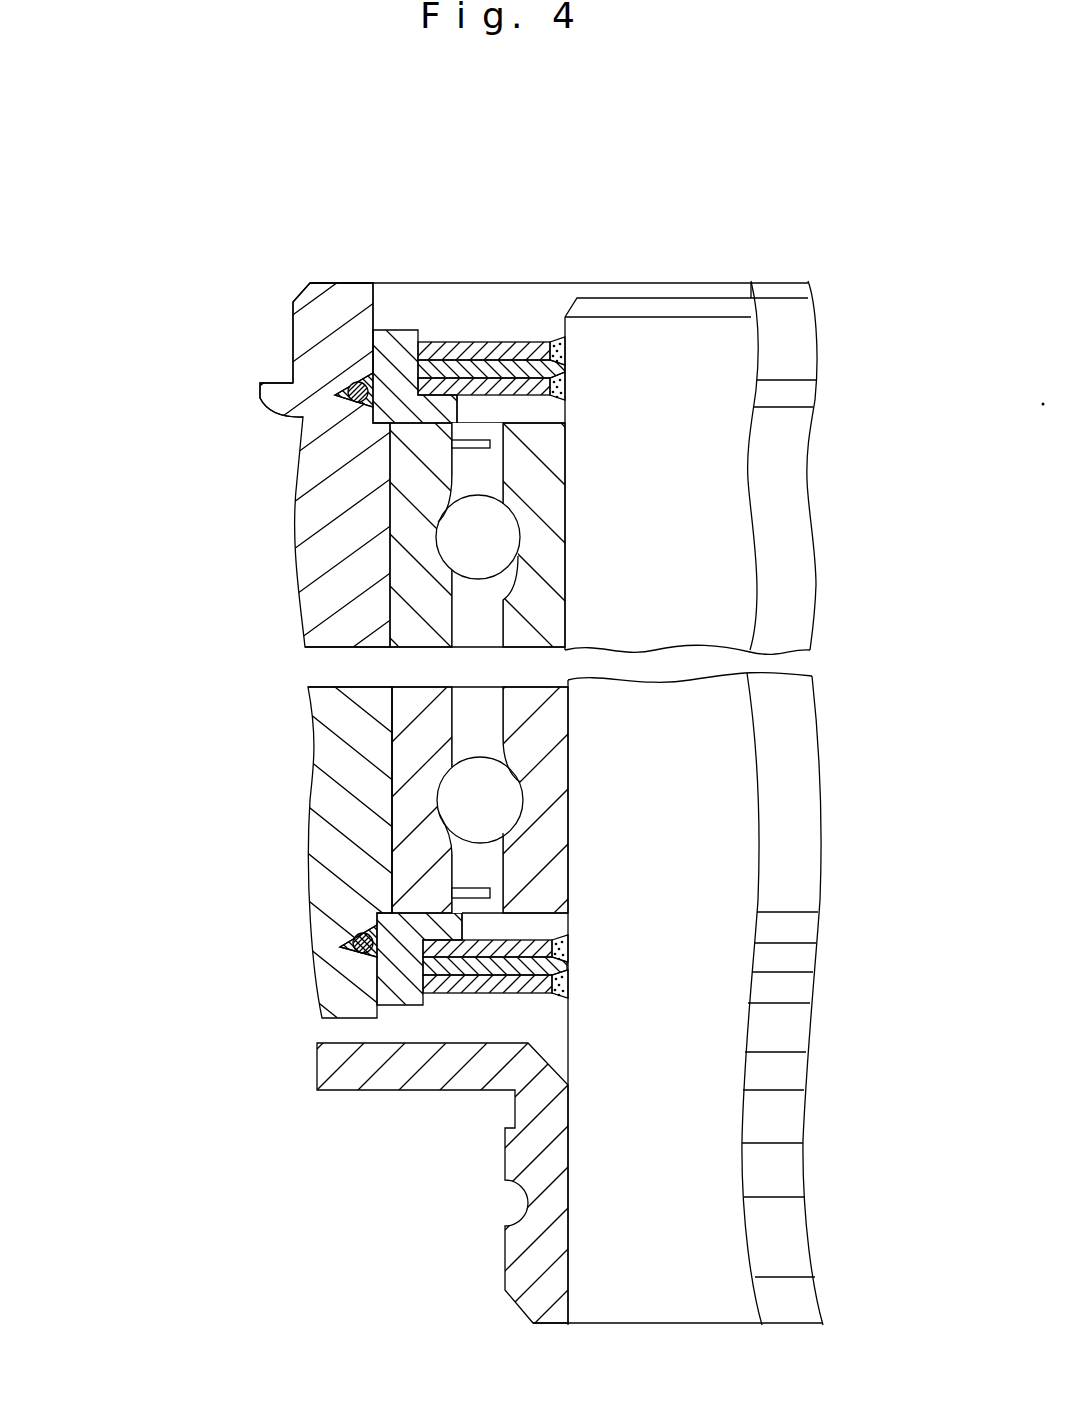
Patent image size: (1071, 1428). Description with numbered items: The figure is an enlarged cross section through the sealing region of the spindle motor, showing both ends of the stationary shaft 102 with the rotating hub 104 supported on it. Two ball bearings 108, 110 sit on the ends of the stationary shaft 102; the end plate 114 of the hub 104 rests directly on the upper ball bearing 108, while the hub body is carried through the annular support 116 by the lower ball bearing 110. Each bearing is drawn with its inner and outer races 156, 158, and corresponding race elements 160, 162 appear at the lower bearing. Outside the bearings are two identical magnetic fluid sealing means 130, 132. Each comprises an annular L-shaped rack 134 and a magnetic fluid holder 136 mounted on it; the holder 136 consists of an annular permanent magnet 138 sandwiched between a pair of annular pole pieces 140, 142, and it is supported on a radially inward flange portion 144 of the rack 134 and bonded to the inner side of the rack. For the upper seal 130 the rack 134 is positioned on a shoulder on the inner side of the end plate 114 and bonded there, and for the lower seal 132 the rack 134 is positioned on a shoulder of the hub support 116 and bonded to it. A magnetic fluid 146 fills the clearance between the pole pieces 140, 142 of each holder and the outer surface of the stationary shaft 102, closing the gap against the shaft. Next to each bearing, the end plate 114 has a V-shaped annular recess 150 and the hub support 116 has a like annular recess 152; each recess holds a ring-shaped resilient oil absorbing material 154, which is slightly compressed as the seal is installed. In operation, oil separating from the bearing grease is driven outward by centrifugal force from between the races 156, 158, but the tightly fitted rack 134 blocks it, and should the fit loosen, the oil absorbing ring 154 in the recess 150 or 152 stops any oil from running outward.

The stationary shaft 102 is at (632, 1297).
The hub 104 is at (248, 398).
The upper ball bearing 108 is at (378, 585).
The lower ball bearing 110 is at (378, 718).
The end plate 114 is at (320, 398).
The annular support 116 is at (327, 838).
The magnetic fluid sealing means 130 is at (530, 414).
The magnetic fluid sealing means 132 is at (522, 925).
The rack 134 is at (400, 337).
The magnetic fluid holder 136 is at (403, 668).
The permanent magnet 138 is at (510, 360).
The pole piece 140 is at (442, 355).
The pole piece 142 is at (530, 377).
The flange portion 144 is at (418, 428).
The magnetic fluid 146 is at (567, 380).
The annular recess 150 is at (352, 386).
The annular recess 152 is at (340, 948).
The ring-shaped resilient material 154 is at (358, 405).
The inner race 156 is at (552, 592).
The outer race 158 is at (403, 530).
The lower right support 160 is at (533, 843).
The lower left support 162 is at (400, 778).